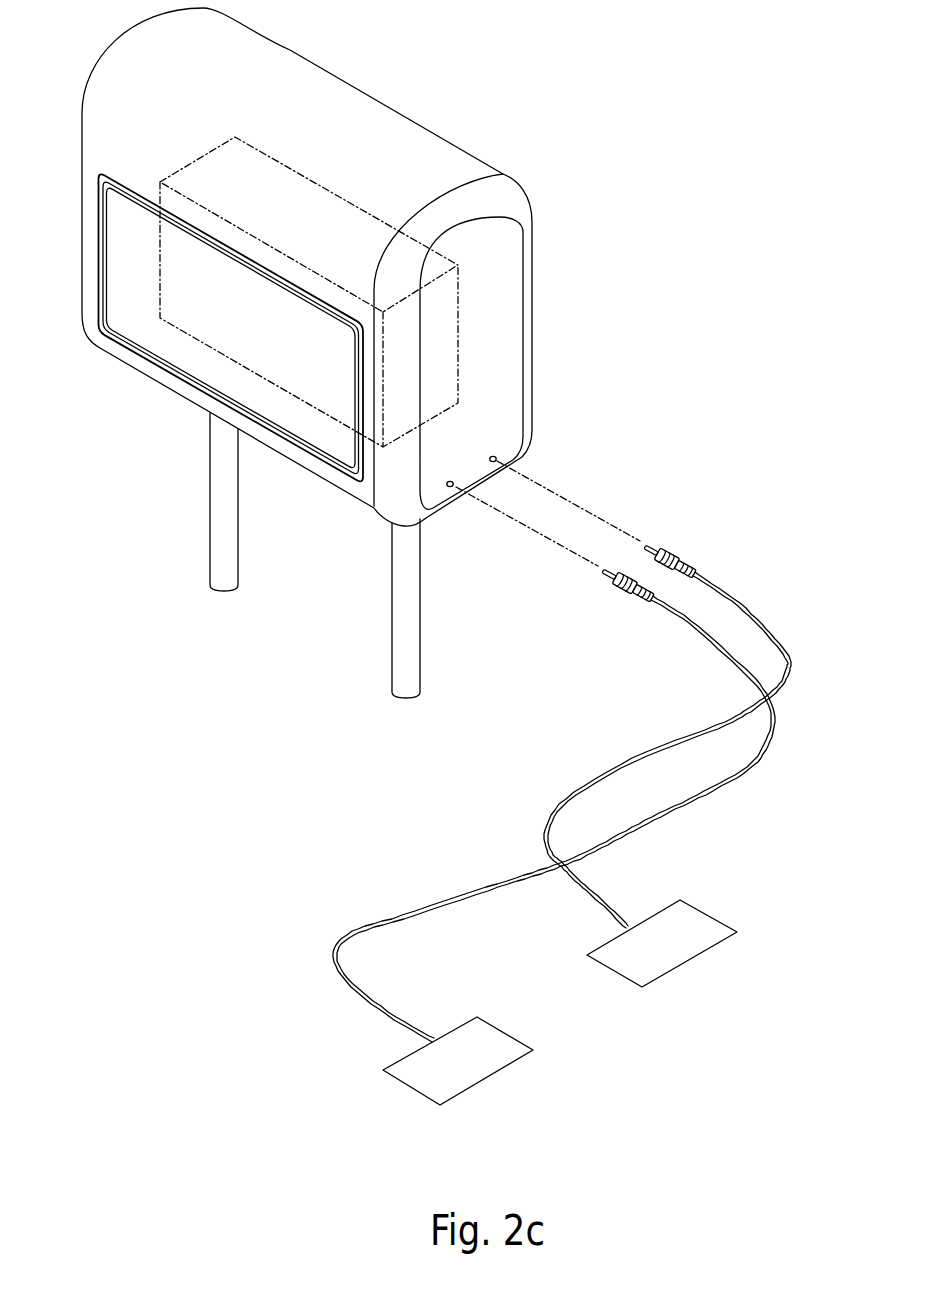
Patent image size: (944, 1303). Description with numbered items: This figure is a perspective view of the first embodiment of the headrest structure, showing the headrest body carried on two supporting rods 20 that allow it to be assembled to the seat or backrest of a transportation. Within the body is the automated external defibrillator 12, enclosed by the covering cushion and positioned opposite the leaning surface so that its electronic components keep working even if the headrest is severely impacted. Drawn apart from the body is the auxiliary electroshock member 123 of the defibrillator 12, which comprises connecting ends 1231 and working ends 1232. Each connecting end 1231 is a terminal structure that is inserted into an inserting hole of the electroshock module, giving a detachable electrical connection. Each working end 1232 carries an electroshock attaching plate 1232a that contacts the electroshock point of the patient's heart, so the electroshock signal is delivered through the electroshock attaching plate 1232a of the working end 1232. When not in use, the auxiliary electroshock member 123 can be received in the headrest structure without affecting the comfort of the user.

The automated external defibrillator 12 is at (303, 197).
The supporting rod 20 is at (205, 495).
The auxiliary electroshock member 123 is at (757, 613).
The connecting end 1231 is at (673, 550).
The working end 1232 is at (607, 971).
The electroshock attaching plate 1232a is at (673, 945).